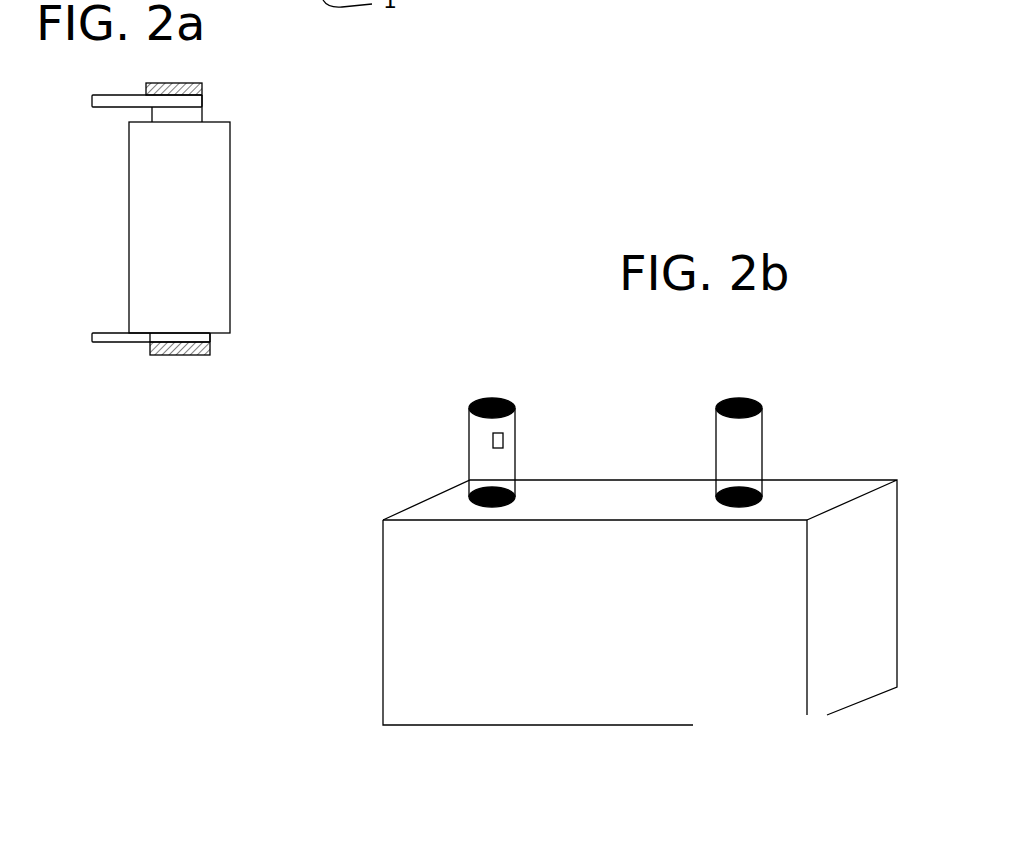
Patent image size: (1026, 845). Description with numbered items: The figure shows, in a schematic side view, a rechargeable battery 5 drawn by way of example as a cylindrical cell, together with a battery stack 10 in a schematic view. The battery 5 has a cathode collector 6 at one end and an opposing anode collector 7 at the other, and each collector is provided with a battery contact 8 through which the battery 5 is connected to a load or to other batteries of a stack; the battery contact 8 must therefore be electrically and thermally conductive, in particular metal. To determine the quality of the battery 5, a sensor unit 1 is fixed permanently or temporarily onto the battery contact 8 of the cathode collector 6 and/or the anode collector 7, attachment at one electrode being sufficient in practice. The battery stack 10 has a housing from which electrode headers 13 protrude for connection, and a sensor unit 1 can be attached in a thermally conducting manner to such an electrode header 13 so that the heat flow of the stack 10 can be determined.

In FIG. 2a, the sensor unit 1 is at (183, 92).
In FIG. 2b, the sensor unit 1 is at (502, 443).
In FIG. 2a, the rechargeable battery 5 is at (169, 235).
In FIG. 2a, the cathode collector 6 is at (198, 110).
In FIG. 2a, the anode collector 7 is at (173, 332).
In FIG. 2a, the battery contact 8 is at (98, 102).
In FIG. 2b, the battery stack 10 is at (628, 653).
In FIG. 2b, the electrode header 13 is at (498, 463).